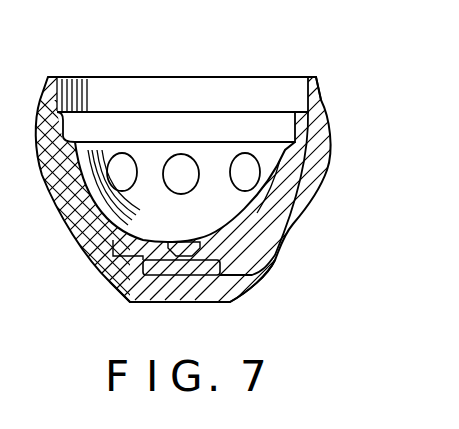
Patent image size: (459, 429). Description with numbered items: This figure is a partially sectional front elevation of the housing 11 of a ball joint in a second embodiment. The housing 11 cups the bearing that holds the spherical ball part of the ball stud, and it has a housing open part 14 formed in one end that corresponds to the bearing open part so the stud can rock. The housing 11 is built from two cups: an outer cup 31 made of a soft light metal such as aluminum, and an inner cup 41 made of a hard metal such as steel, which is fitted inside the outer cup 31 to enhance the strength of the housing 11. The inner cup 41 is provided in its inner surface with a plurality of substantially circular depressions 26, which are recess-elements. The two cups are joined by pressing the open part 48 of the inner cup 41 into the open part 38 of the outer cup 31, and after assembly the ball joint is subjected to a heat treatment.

The housing 11 is at (340, 152).
The housing open part 14 is at (215, 77).
The substantially circular depressions 26 is at (121, 158).
The outer cup 31 is at (278, 256).
The open part of the outer cup 38 is at (318, 92).
The inner cup 41 is at (257, 220).
The open part of the inner cup 48 is at (72, 113).